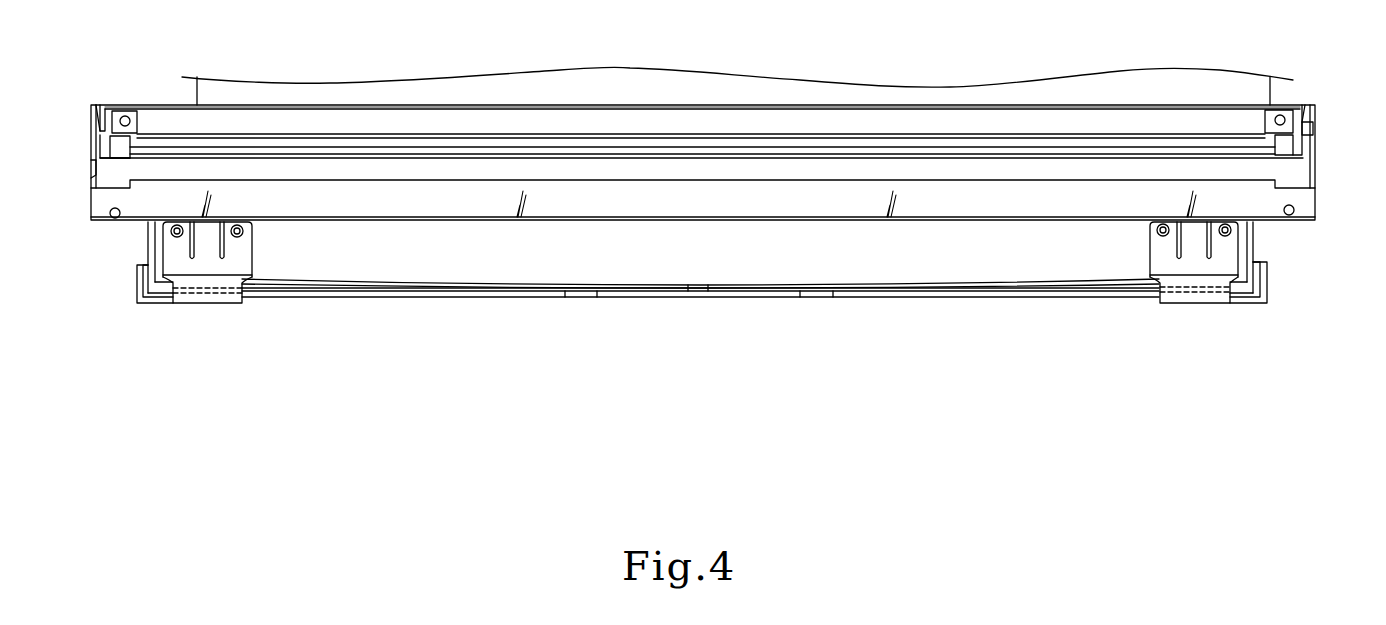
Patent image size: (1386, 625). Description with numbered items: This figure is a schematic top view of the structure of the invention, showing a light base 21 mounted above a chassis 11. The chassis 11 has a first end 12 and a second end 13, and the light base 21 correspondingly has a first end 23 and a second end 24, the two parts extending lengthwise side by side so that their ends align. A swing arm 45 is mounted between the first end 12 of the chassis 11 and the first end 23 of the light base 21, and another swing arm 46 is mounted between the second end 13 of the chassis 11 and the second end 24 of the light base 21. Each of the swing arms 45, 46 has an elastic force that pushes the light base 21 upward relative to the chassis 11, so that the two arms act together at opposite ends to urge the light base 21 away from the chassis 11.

The chassis 11 is at (630, 68).
The light base 21 is at (333, 103).
The first end of the light base 23 is at (90, 172).
The second end of the light base 24 is at (1316, 153).
The first end of the chassis 12 is at (158, 237).
The second end of the chassis 13 is at (1253, 233).
The swing arm 45 is at (146, 256).
The swing arm 46 is at (1260, 257).